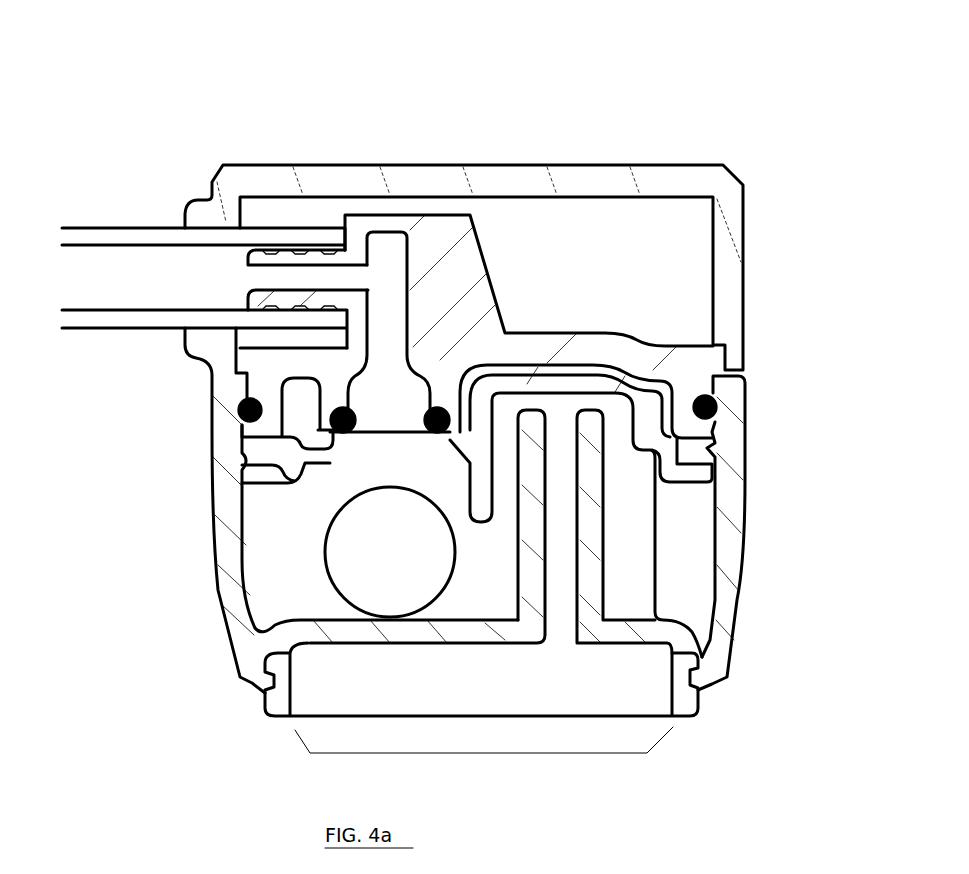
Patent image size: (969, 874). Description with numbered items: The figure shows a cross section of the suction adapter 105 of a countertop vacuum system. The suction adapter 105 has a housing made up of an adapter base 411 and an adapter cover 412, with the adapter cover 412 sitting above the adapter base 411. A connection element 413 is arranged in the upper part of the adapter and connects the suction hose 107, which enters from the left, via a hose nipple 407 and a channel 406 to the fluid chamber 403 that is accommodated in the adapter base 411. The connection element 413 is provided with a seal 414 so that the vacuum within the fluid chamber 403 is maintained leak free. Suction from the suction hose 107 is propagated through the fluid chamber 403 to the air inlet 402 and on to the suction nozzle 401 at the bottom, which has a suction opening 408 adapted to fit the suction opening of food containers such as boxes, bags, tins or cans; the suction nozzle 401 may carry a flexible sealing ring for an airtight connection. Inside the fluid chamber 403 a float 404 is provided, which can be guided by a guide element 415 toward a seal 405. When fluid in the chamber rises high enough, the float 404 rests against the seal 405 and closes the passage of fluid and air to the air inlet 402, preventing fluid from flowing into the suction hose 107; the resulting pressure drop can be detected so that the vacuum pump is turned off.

The suction adapter 105 is at (116, 84).
The suction hose 107 is at (126, 338).
The suction nozzle 401 is at (260, 716).
The air inlet 402 is at (562, 550).
The fluid chamber 403 is at (283, 574).
The float 404 is at (375, 565).
The seal 405 is at (415, 436).
The channel 406 is at (379, 252).
The hose nipple 407 is at (297, 247).
The suction opening 408 is at (482, 753).
The adapter base 411 is at (757, 446).
The adapter cover 412 is at (756, 279).
The connection element 413 is at (462, 265).
The seal 414 is at (226, 417).
The guide element 415 is at (486, 441).